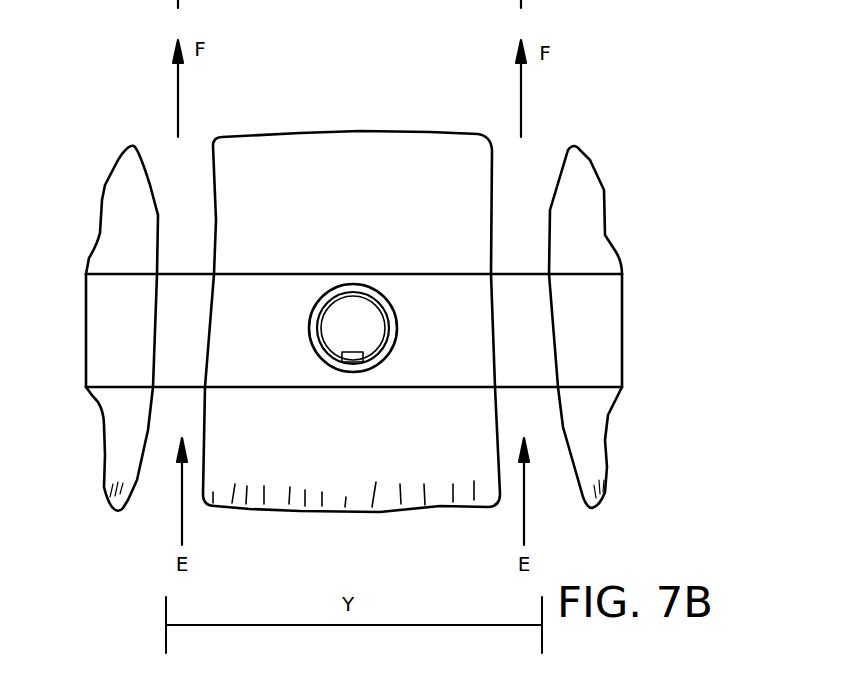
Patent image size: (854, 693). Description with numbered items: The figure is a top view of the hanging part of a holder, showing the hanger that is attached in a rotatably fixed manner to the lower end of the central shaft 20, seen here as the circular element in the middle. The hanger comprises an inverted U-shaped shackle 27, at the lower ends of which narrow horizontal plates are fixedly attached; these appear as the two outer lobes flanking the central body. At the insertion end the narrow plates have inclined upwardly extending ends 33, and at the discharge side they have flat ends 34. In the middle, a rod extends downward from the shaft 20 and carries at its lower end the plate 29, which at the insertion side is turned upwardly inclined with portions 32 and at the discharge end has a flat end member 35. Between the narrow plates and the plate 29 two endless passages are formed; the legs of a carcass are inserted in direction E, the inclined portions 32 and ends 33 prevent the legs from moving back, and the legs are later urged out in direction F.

The shaft 20 is at (367, 336).
The inverted U-shaped shackle 27 is at (613, 350).
The plate 29 is at (278, 438).
The upwardly inclined portions 32 is at (332, 491).
The inclined upwardly extending ends 33 is at (107, 489).
The flat ends 34 is at (118, 183).
The flat end member 35 is at (344, 206).